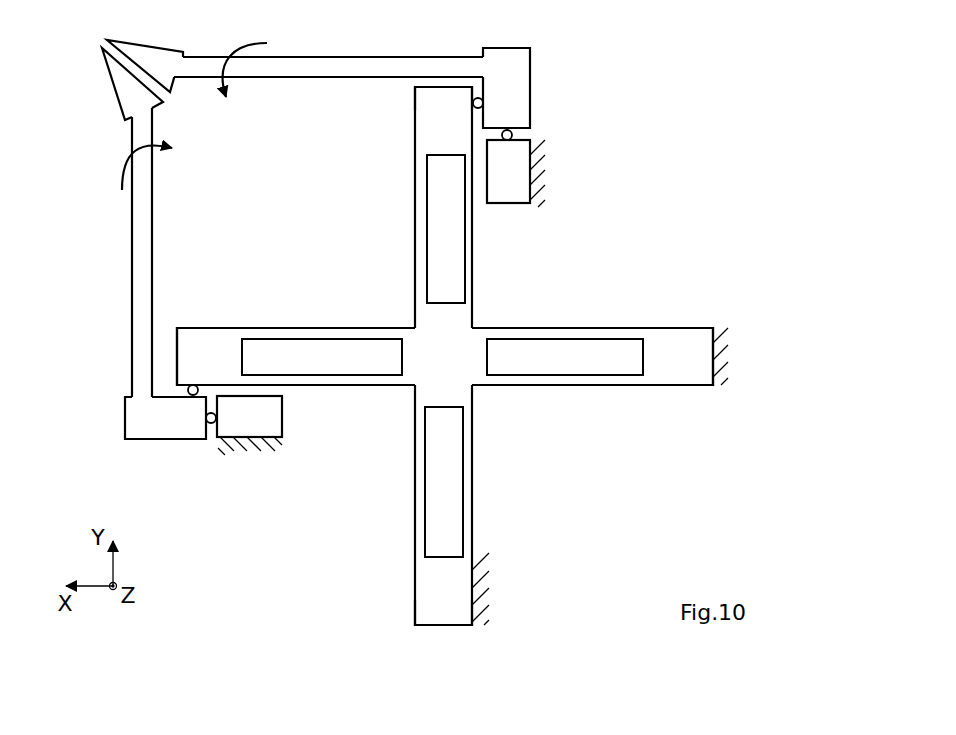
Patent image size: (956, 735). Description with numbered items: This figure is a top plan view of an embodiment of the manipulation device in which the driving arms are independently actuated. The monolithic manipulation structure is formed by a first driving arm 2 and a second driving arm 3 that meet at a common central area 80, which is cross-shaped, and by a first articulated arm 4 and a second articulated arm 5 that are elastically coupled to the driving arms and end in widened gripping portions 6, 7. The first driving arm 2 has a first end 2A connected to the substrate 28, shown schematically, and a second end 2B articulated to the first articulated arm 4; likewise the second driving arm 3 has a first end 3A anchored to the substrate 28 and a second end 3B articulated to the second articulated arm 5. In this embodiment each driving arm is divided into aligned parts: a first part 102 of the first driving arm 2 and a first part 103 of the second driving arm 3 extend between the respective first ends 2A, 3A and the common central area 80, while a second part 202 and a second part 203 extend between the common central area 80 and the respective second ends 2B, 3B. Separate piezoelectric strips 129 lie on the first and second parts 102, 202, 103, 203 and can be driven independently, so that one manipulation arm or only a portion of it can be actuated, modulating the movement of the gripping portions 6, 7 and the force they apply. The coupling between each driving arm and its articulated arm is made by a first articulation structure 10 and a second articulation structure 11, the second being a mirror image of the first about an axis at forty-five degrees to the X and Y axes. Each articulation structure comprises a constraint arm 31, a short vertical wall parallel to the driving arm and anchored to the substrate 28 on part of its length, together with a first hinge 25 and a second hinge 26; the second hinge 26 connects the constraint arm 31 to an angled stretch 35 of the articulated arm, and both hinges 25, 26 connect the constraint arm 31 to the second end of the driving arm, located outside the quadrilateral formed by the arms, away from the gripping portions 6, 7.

The first driving arm 2 is at (415, 500).
The first end of the first driving arm 2A is at (427, 600).
The second end of the first driving arm 2B is at (437, 112).
The second driving arm 3 is at (568, 326).
The first end of the second driving arm 3A is at (688, 331).
The second end of the second driving arm 3B is at (198, 337).
The first articulated arm 4 is at (318, 64).
The second articulated arm 5 is at (130, 244).
The gripping portion 6 is at (160, 57).
The gripping portion 7 is at (125, 82).
The first articulation structure 10 is at (532, 135).
The second articulation structure 11 is at (205, 455).
The first hinge 25 is at (477, 97).
The second hinge 26 is at (488, 138).
The substrate 28 is at (543, 178).
The constraint arm 31 is at (267, 420).
The angled stretch 35 is at (513, 82).
The common central area 80 is at (455, 356).
The first part of the first driving arm 102 is at (612, 332).
The first part of the second driving arm 103 is at (470, 498).
The piezoelectric strips 129 is at (370, 347).
The second part of the first driving arm 202 is at (267, 328).
The second part of the second driving arm 203 is at (418, 220).